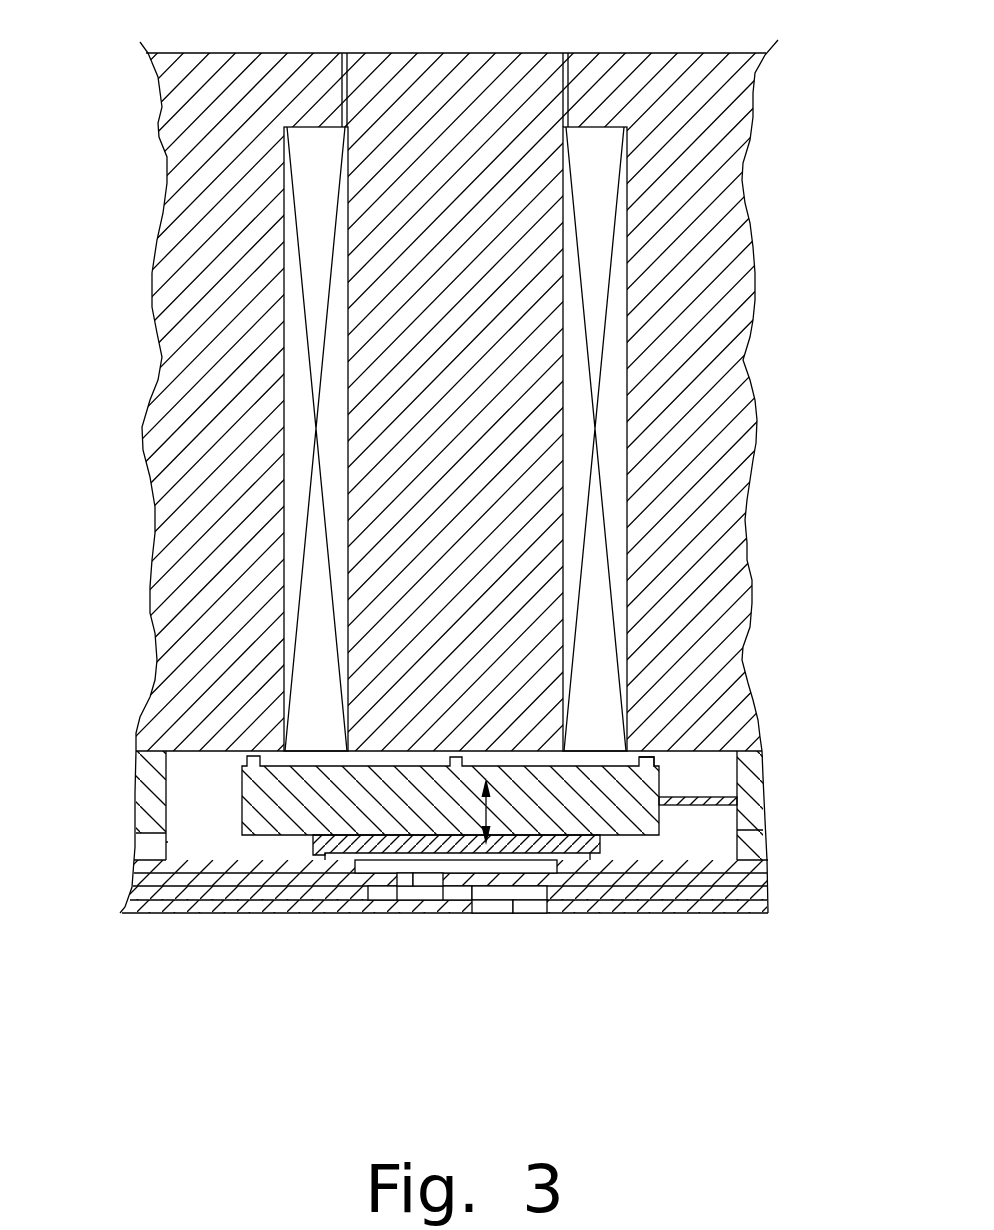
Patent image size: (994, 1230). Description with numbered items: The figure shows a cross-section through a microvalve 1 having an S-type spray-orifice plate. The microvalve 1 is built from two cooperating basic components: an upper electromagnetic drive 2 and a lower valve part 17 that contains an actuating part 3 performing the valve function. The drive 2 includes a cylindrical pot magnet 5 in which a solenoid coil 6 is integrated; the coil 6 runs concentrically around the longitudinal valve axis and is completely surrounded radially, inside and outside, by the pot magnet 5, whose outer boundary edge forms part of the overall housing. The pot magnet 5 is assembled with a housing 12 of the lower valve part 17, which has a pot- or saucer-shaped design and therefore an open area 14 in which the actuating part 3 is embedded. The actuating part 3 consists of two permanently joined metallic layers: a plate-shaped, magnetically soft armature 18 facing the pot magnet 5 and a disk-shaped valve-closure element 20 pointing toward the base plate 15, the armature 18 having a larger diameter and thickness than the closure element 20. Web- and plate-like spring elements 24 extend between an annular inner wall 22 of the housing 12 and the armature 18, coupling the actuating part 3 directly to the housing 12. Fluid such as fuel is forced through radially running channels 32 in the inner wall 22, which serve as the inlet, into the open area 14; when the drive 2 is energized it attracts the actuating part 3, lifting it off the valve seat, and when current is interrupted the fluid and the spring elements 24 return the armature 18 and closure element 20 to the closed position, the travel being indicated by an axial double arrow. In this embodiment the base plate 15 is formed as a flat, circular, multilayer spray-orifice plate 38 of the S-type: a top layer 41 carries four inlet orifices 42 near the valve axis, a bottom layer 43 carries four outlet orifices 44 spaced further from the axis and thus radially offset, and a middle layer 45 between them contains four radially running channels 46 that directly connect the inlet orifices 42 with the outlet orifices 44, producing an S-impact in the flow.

The microvalve 1 is at (122, 645).
The electromagnetic drive 2 is at (792, 348).
The actuating part 3 is at (228, 798).
The pot magnet 5 is at (732, 545).
The solenoid coil 6 is at (597, 130).
The housing 12 is at (692, 878).
The open area 14 is at (215, 835).
The base plate 15 is at (622, 867).
The lower valve part 17 is at (795, 896).
The armature 18 is at (640, 786).
The valve-closure element 20 is at (323, 840).
The inner wall 22 is at (752, 845).
The spring elements 24 is at (710, 806).
The channels 32 is at (140, 845).
The spray-orifice plate 38 is at (338, 888).
The top layer 41 is at (398, 879).
The inlet orifices 42 is at (425, 879).
The bottom layer 43 is at (478, 905).
The outlet orifices 44 is at (532, 904).
The middle layer 45 is at (458, 893).
The channels 46 is at (378, 893).